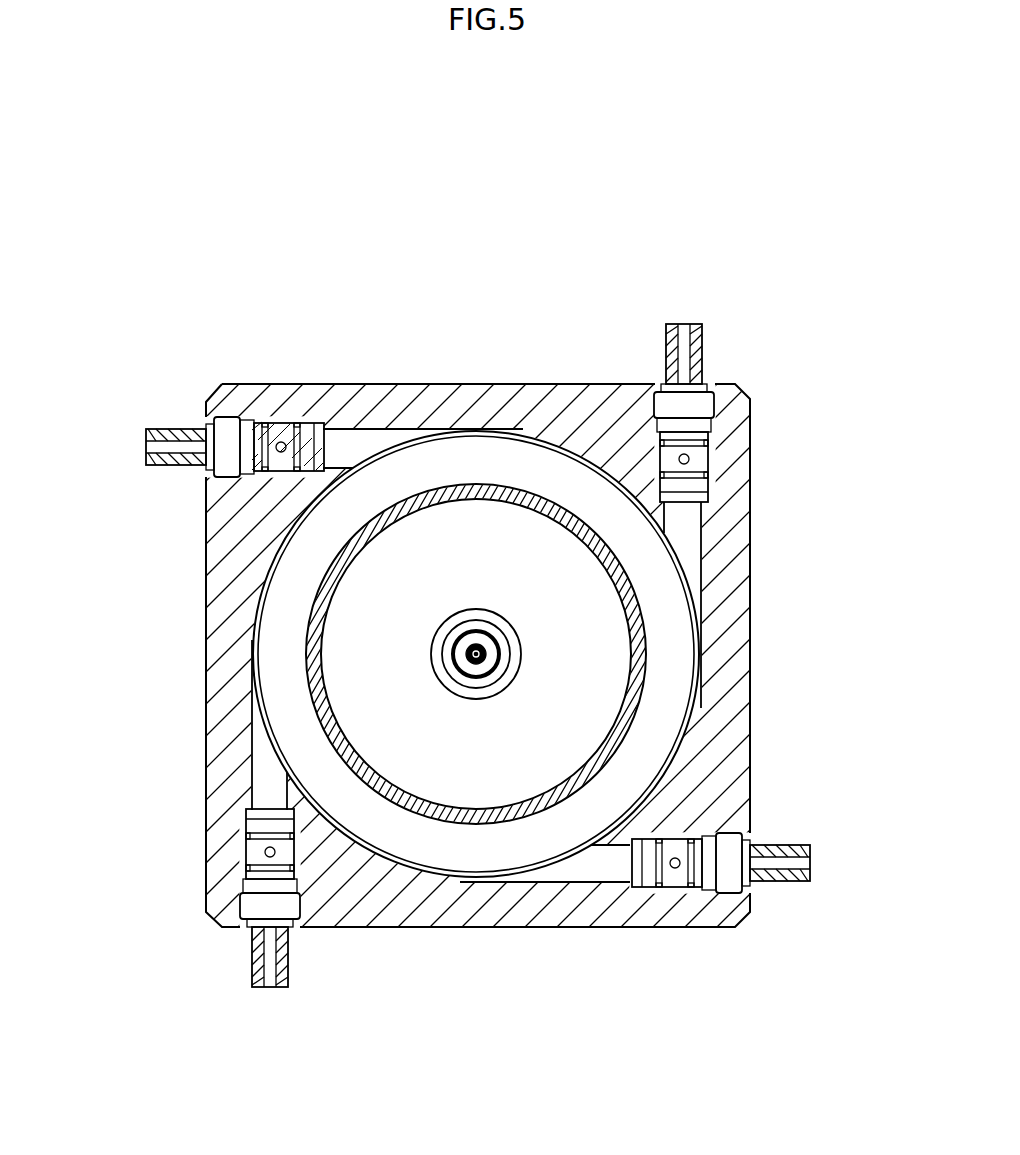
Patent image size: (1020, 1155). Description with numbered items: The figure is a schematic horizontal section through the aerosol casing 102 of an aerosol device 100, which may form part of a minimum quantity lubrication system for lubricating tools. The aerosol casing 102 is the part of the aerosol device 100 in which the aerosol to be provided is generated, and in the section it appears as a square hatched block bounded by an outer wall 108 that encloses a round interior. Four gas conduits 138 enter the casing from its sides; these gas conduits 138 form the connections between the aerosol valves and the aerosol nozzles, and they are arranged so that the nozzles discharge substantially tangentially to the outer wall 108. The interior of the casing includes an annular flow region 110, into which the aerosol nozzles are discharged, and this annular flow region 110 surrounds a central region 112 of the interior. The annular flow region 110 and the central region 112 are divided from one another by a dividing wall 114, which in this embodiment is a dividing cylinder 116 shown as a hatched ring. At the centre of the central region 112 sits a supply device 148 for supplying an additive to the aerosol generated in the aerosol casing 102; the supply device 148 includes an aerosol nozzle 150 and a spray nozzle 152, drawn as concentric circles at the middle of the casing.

The aerosol device 100 is at (571, 212).
The aerosol casing 102 is at (232, 626).
The outer wall 108 is at (235, 660).
The annular flow region 110 is at (478, 458).
The central region 112 is at (434, 544).
The dividing wall 114 is at (607, 548).
The dividing cylinder 116 is at (628, 575).
The gas conduits 138 is at (683, 305).
The supply device 148 is at (490, 651).
The aerosol nozzle 150 is at (492, 655).
The spray nozzle 152 is at (492, 660).